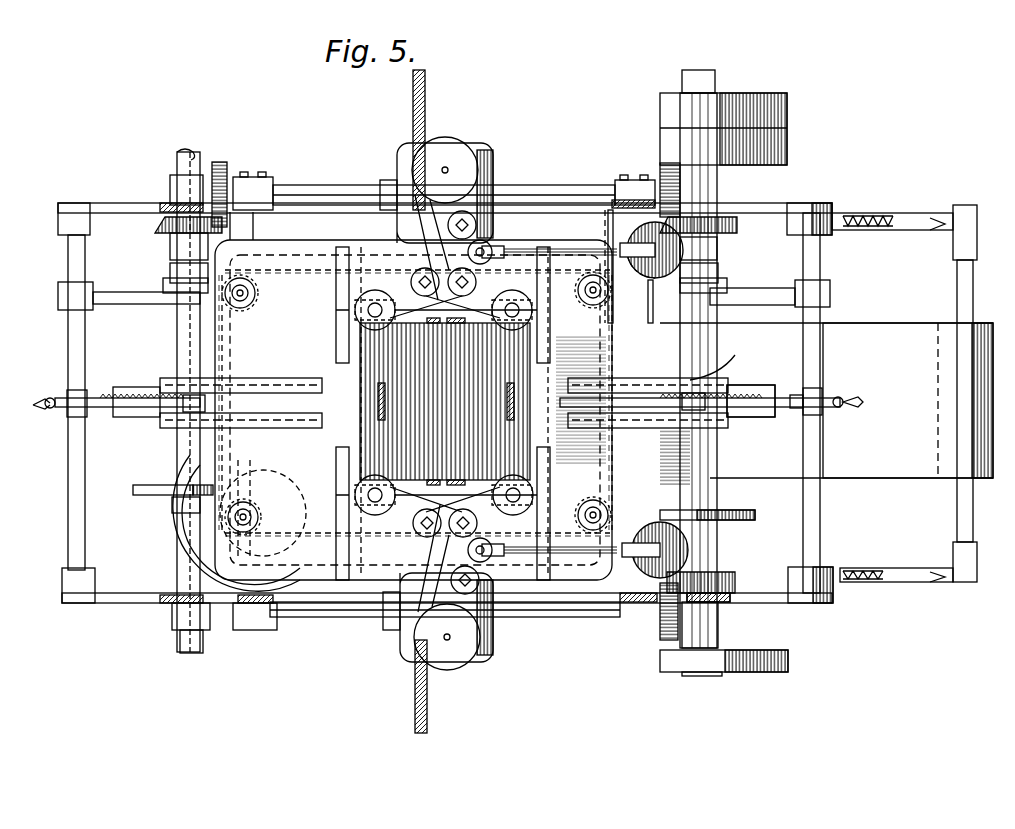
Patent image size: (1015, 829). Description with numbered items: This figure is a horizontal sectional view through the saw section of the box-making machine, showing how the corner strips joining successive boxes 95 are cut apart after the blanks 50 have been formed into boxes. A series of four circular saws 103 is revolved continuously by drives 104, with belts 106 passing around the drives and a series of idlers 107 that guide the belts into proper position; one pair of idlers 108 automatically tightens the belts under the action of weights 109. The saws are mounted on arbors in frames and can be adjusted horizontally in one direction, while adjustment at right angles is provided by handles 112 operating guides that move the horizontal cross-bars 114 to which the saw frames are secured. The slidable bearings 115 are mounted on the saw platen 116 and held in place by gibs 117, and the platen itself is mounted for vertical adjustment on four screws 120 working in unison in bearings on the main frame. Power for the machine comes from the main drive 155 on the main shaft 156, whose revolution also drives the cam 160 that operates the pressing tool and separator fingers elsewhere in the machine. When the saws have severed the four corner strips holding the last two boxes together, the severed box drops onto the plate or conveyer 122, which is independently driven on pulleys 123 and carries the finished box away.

The blank 50 is at (727, 600).
The box 95 is at (505, 400).
The circular saw 103 is at (527, 295).
The drive 104 is at (450, 148).
The belt 106 is at (430, 238).
The idler 107 is at (476, 228).
The idler 108 is at (512, 570).
The weight 109 is at (627, 235).
The handle 112 is at (870, 398).
The horizontal cross-bar 114 is at (340, 322).
The slidable bearing 115 is at (760, 390).
The saw platen 116 is at (250, 340).
The gib 117 is at (676, 378).
The screw 120 is at (256, 293).
The conveyer 122 is at (860, 462).
The pulley 123 is at (937, 450).
The main drive 155 is at (795, 645).
The main shaft 156 is at (700, 461).
The cam 160 is at (147, 485).